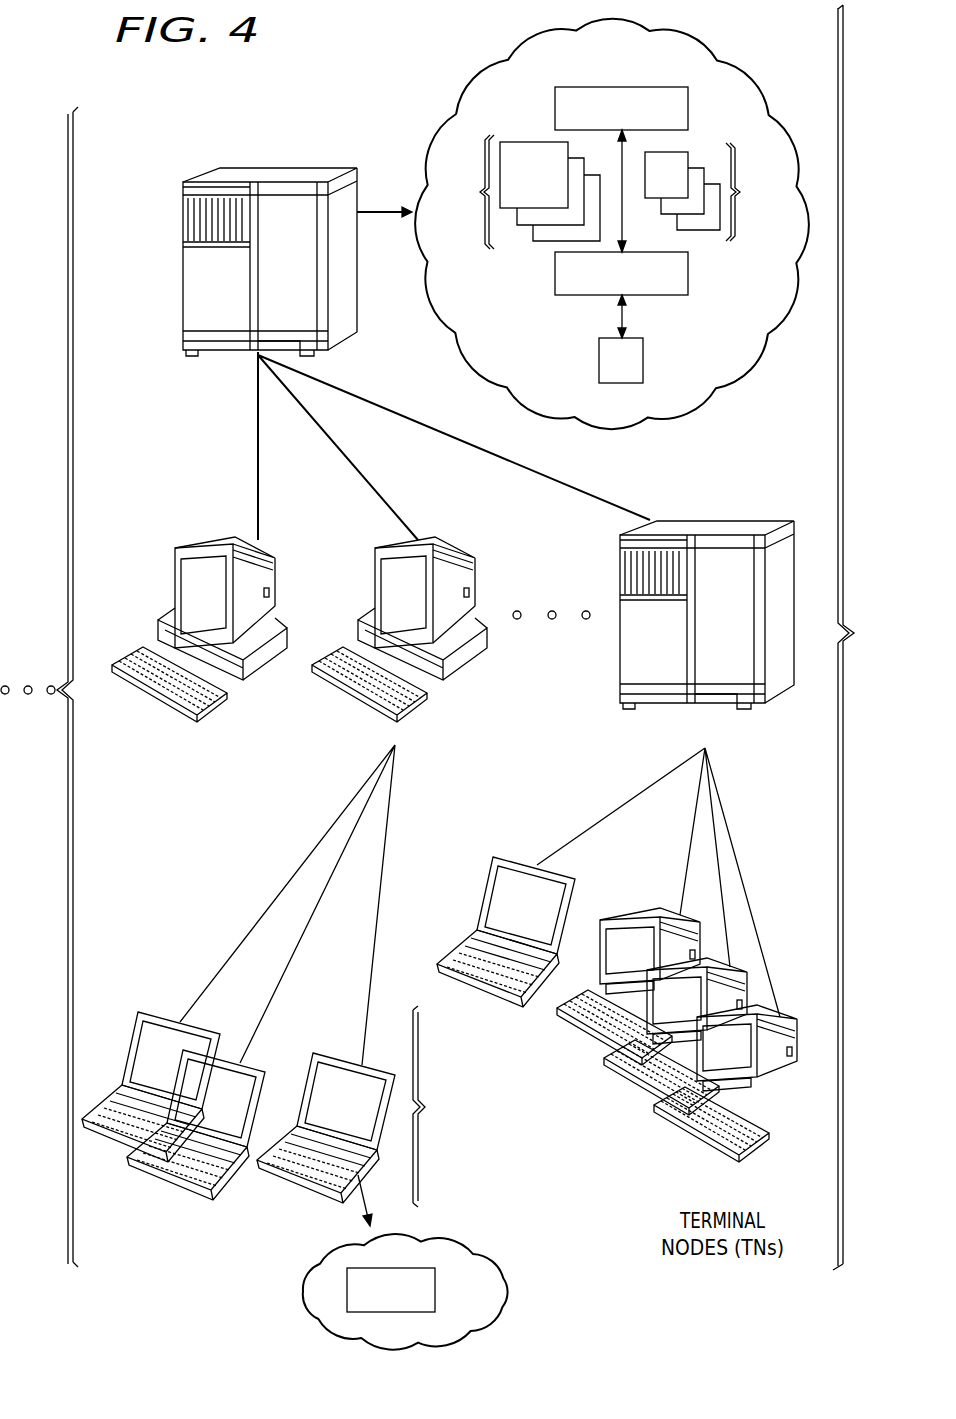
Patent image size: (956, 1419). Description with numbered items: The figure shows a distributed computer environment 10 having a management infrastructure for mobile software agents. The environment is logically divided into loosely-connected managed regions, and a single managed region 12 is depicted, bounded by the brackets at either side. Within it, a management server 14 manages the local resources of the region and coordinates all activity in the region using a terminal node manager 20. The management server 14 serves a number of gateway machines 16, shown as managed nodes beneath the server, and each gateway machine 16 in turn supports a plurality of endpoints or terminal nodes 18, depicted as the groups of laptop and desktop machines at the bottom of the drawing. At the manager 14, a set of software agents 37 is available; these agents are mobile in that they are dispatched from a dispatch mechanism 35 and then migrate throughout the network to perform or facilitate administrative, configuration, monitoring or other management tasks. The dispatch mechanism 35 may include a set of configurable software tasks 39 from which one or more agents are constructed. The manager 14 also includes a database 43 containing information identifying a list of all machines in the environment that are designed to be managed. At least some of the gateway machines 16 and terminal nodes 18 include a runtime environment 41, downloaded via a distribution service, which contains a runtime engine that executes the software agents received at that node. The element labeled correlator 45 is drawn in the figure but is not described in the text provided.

The distributed computer environment 10 is at (178, 909).
The managed region 12 is at (862, 330).
The management server 14 is at (182, 297).
The gateway machine 16 is at (176, 576).
The terminal node 18 is at (265, 1133).
The terminal node manager 20 is at (226, 238).
The dispatch mechanism 35 is at (690, 107).
The software agents 37 is at (524, 192).
The configurable software tasks 39 is at (709, 192).
The runtime environment 41 is at (436, 1289).
The database 43 is at (644, 362).
The correlator 45 is at (590, 297).